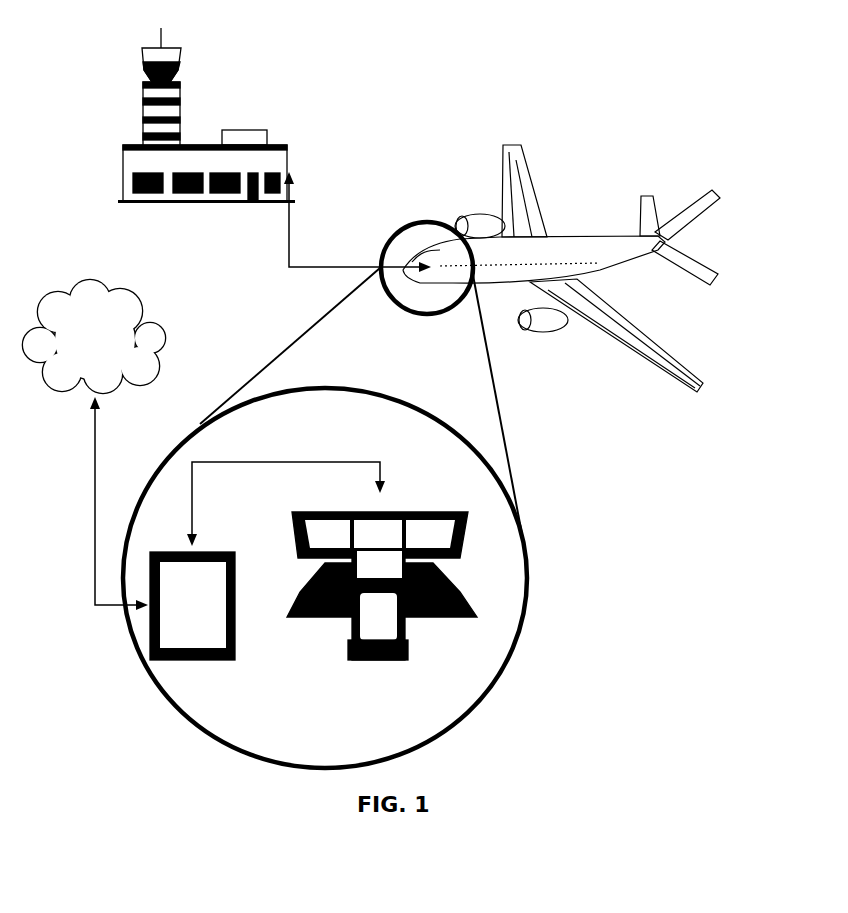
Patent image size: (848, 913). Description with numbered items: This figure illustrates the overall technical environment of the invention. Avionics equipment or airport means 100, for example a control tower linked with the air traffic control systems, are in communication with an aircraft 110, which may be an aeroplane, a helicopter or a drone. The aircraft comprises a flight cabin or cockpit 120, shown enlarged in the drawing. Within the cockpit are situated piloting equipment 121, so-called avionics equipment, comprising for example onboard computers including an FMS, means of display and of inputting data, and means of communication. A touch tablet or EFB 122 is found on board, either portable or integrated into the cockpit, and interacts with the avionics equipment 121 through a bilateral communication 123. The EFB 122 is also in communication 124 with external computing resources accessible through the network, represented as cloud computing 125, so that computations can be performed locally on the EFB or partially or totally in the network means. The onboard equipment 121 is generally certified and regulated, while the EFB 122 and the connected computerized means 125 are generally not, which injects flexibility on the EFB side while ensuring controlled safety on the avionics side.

The airport means 100 is at (190, 45).
The aircraft 110 is at (532, 152).
The cockpit 120 is at (392, 232).
The piloting equipment 121 is at (425, 507).
The EFB 122 is at (210, 540).
The bilateral communication 123 is at (277, 458).
The communication 124 is at (97, 497).
The cloud computing 125 is at (113, 293).